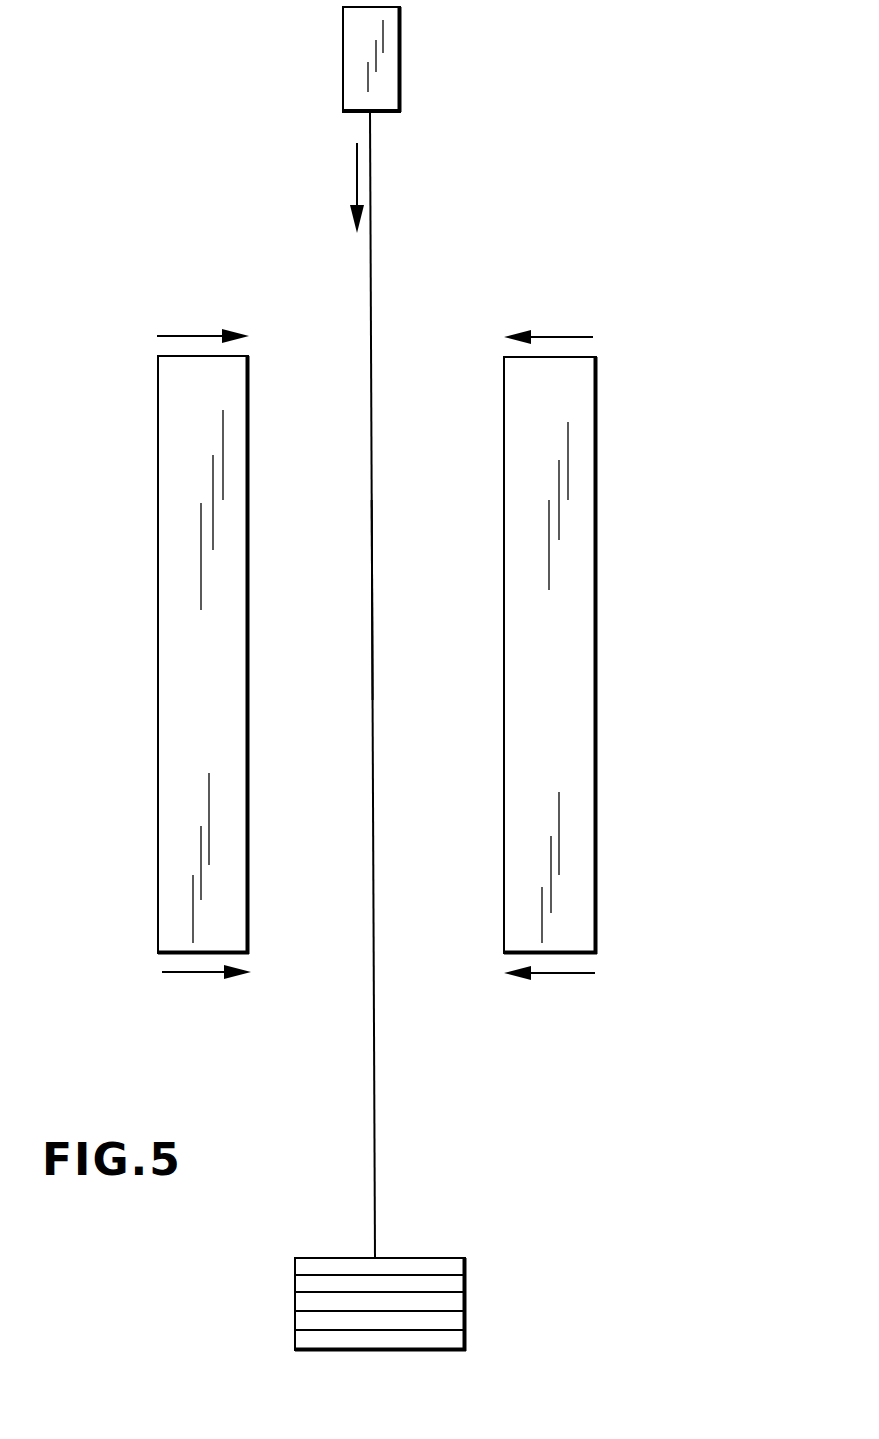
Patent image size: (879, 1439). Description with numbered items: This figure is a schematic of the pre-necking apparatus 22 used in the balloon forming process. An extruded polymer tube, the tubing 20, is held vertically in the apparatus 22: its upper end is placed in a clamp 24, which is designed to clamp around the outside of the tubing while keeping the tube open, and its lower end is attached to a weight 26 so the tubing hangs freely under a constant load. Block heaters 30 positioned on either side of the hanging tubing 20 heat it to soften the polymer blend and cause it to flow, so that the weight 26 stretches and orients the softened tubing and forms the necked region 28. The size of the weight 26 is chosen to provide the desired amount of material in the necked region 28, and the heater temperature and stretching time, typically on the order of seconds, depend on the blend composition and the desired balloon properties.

The tubing 20 is at (371, 150).
The pre-necking apparatus 22 is at (268, 68).
The clamp 24 is at (388, 88).
The weight 26 is at (296, 1293).
The necked region 28 is at (369, 604).
The block heaters 30 is at (180, 648).